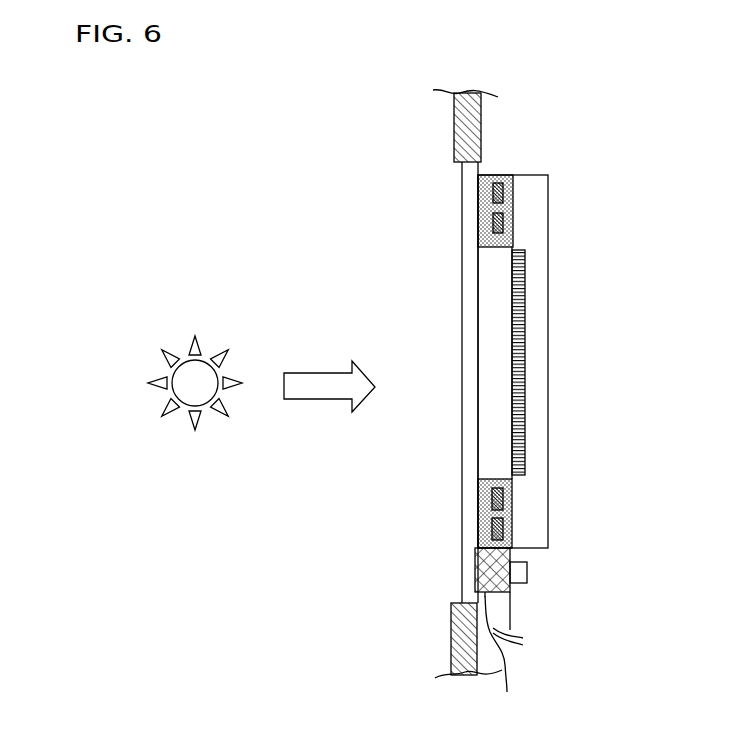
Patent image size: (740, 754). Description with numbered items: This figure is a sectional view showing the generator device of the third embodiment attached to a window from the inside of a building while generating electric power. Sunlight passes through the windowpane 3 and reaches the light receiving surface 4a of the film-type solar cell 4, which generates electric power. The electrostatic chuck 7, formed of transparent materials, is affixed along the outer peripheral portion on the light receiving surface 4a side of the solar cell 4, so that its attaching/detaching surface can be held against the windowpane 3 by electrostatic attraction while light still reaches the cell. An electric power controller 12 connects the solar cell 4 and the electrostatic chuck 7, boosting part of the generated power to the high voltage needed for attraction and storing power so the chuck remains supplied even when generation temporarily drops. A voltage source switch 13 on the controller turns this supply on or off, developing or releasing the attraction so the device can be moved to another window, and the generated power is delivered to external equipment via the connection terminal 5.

The windowpane 3 is at (461, 461).
The solar cell 4 is at (542, 217).
The light receiving surface 4a is at (512, 333).
The connection terminal 5 is at (512, 610).
The electrostatic chuck 7 is at (478, 203).
The electric power controller 12 is at (507, 660).
The voltage source switch 13 is at (527, 573).